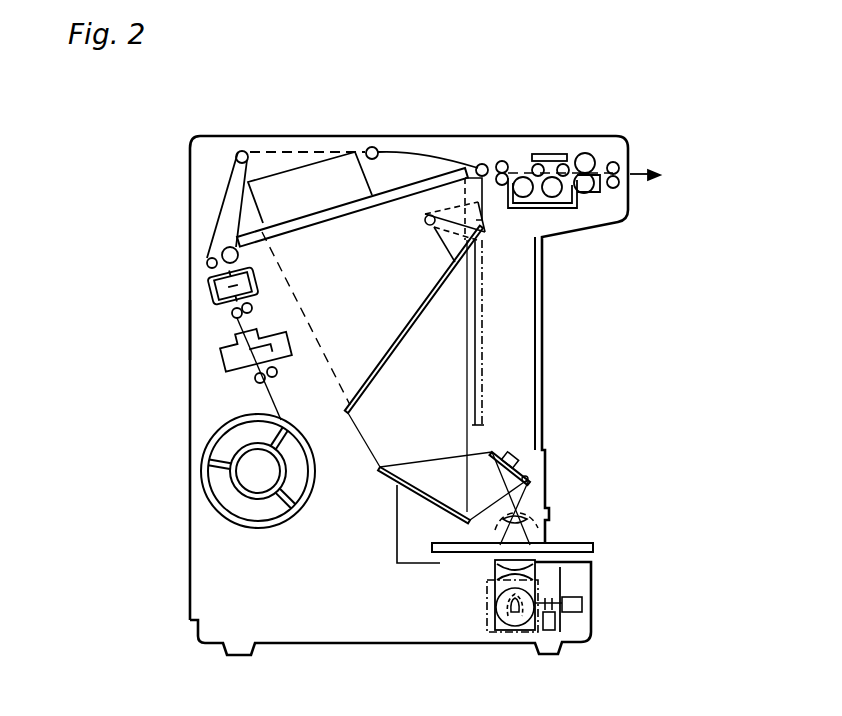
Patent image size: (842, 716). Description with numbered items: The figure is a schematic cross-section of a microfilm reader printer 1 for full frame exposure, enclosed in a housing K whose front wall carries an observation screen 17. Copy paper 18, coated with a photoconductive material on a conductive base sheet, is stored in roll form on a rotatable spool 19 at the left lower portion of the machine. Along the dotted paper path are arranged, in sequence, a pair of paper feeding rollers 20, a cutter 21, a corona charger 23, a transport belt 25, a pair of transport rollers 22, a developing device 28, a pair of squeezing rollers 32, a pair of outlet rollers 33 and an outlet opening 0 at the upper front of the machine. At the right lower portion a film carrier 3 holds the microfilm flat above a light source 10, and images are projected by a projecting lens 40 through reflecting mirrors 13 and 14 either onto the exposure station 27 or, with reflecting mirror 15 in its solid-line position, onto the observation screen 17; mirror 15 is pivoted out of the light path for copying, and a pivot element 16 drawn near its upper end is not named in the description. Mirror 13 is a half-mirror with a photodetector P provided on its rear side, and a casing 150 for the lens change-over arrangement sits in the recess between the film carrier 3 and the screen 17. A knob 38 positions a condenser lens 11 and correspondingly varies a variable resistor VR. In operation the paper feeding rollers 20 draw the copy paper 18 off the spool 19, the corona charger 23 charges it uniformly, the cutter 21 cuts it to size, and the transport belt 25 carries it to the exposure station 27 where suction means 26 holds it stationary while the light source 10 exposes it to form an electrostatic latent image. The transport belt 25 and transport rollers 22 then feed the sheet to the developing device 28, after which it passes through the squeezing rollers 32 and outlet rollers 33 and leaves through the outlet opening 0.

The housing K is at (186, 560).
The microfilm reader printer 1 is at (190, 330).
The transport belt 25 is at (222, 212).
The suction means 26 is at (300, 185).
The exposure station 27 is at (390, 200).
The corona charger 23 is at (212, 285).
The cutter 21 is at (225, 355).
The paper feeding rollers 20 is at (258, 378).
The copy paper 18 is at (265, 395).
The spool 19 is at (205, 490).
The lens holder 16 is at (425, 216).
The reflecting mirror 15 is at (420, 318).
The reflecting mirror 14 is at (386, 474).
The observation screen 17 is at (542, 332).
The reflecting mirror 13 is at (533, 478).
The photodetector P is at (515, 455).
The casing 150 is at (538, 505).
The projecting lens 40 is at (540, 522).
The film carrier 3 is at (594, 548).
The condenser lens 11 is at (565, 575).
The light source 10 is at (510, 612).
The knob 38 is at (583, 604).
The variable resistor VR is at (556, 620).
The transport rollers 22 is at (486, 164).
The developing device 28 is at (552, 155).
The squeezing rollers 32 is at (592, 162).
The outlet rollers 33 is at (616, 168).
The outlet opening 0 is at (630, 173).